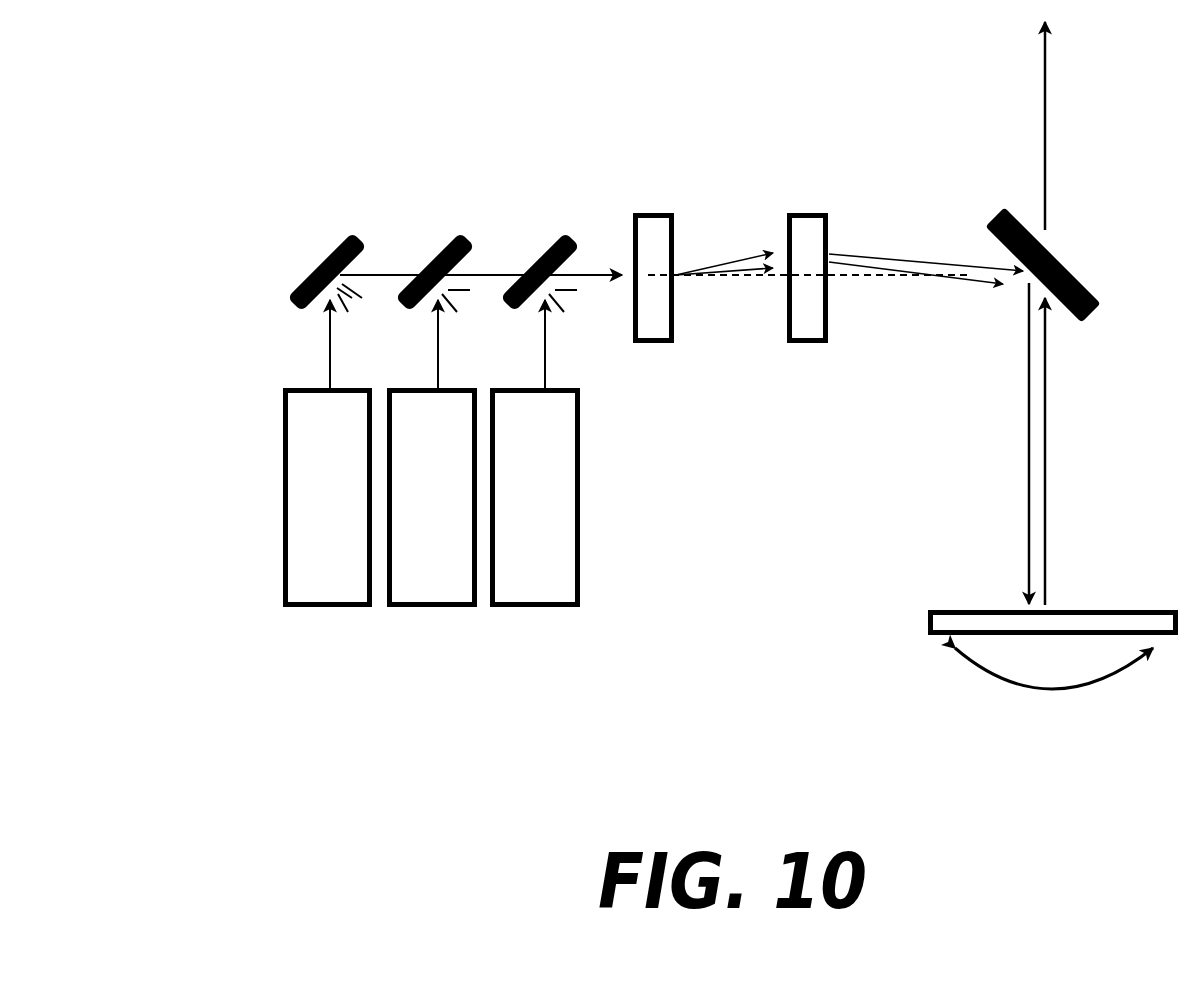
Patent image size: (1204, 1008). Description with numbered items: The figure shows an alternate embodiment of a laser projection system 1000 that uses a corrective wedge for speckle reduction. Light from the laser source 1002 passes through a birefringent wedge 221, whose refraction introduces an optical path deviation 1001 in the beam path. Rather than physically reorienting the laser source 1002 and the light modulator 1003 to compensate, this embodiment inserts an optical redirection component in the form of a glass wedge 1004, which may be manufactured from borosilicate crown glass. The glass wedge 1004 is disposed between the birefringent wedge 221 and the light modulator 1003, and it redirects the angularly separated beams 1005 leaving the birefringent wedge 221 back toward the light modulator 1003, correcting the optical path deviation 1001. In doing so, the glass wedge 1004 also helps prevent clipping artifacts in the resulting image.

The laser projection system 1000 is at (222, 240).
The optical path deviation 1001 is at (733, 252).
The laser source 1002 is at (435, 557).
The light modulator 1003 is at (1082, 607).
The glass wedge 1004 is at (807, 315).
The angularly separated beams 1005 is at (872, 262).
The birefringent wedge 221 is at (650, 315).